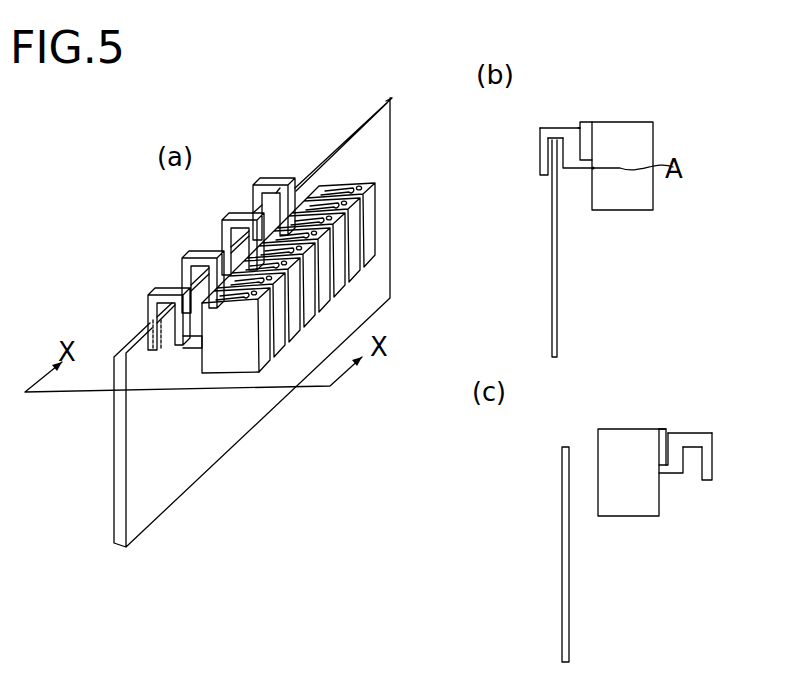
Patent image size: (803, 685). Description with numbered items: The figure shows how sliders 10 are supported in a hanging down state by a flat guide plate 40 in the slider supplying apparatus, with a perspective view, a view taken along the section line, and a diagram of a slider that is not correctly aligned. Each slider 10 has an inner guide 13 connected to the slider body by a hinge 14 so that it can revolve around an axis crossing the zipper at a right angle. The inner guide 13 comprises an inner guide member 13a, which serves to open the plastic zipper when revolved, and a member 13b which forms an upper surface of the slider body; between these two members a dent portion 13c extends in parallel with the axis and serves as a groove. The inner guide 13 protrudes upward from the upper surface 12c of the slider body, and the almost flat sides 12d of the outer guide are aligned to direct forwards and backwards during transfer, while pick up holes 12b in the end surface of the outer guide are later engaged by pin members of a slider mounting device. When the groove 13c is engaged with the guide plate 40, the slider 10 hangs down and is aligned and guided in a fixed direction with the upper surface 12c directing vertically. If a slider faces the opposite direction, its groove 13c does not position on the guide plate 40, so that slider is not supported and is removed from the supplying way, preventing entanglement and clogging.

The slider 10 is at (462, 327).
The pick up holes 12b is at (362, 191).
The upper surface 12c is at (195, 300).
The flat sides 12d is at (238, 353).
The inner guide 13 is at (416, 310).
The inner guide member 13a is at (145, 322).
The member forming upper surface of slider body 13b is at (178, 344).
The dent portion 13c is at (170, 330).
The hinge 14 is at (585, 168).
The guide plate 40 is at (117, 495).